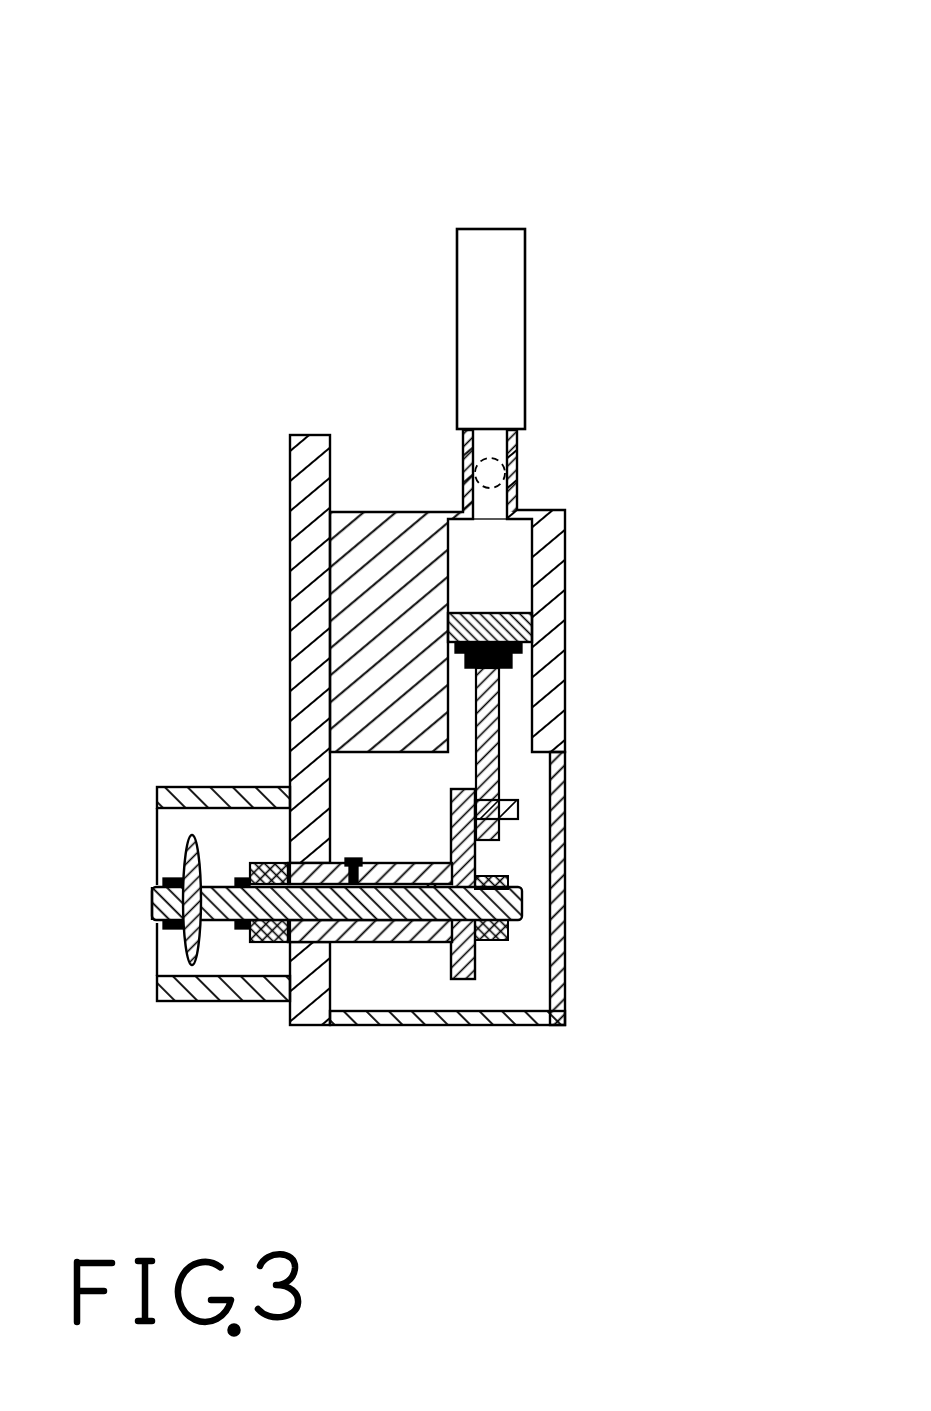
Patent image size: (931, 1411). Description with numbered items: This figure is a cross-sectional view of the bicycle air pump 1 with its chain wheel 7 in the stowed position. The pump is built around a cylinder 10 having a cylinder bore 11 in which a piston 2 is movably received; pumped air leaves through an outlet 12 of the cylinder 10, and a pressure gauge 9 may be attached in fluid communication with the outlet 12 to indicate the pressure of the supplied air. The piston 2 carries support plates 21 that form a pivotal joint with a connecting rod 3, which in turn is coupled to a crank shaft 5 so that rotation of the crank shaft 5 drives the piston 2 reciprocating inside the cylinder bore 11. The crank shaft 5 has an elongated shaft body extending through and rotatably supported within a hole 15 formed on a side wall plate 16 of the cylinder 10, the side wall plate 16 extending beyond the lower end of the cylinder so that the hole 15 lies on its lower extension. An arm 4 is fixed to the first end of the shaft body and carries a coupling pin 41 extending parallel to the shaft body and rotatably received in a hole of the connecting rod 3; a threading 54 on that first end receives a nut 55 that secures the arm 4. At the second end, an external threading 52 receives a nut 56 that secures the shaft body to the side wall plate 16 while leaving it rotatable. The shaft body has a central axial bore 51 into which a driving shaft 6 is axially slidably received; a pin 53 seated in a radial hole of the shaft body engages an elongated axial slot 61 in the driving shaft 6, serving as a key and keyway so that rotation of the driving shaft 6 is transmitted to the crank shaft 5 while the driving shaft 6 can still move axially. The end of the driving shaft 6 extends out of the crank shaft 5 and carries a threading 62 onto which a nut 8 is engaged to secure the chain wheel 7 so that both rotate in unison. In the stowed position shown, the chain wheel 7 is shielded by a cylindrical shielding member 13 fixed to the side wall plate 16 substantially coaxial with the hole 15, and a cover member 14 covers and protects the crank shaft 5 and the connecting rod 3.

The bicycle air pump 1 is at (582, 146).
The piston 2 is at (530, 618).
The connecting rod 3 is at (492, 715).
The arm 4 is at (460, 976).
The crank shaft 5 is at (355, 940).
The driving shaft 6 is at (403, 913).
The chain wheel 7 is at (187, 870).
The nut 8 is at (173, 927).
The pressure gauge 9 is at (515, 262).
The cylinder 10 is at (284, 603).
The cylinder bore 11 is at (515, 557).
The outlet 12 is at (450, 442).
The cylindrical shielding member 13 is at (190, 990).
The cover member 14 is at (565, 995).
The hole 15 is at (287, 1026).
The side wall plate 16 is at (320, 435).
The support plates 21 is at (518, 650).
The coupling pin 41 is at (520, 808).
The central axial bore 51 is at (427, 863).
The external threading 52 is at (243, 867).
The pin 53 is at (349, 858).
The threading 54 is at (522, 905).
The nut 55 is at (490, 945).
The nut 56 is at (258, 944).
The slot 61 is at (392, 863).
The threading 62 is at (153, 895).